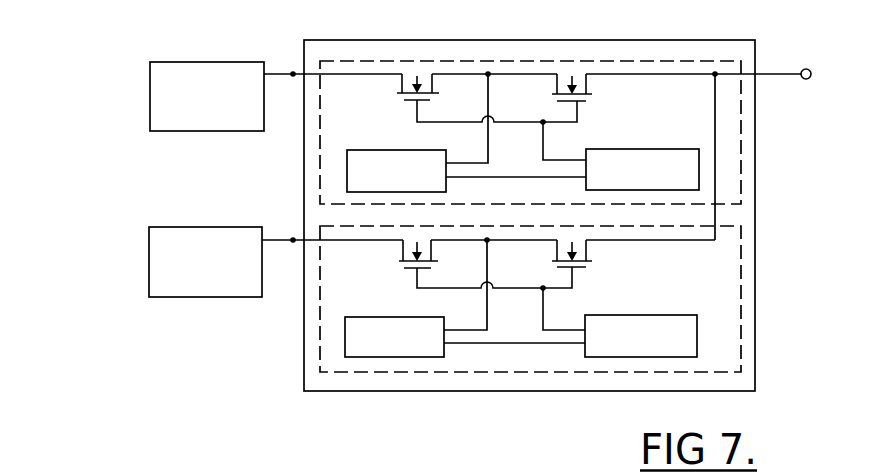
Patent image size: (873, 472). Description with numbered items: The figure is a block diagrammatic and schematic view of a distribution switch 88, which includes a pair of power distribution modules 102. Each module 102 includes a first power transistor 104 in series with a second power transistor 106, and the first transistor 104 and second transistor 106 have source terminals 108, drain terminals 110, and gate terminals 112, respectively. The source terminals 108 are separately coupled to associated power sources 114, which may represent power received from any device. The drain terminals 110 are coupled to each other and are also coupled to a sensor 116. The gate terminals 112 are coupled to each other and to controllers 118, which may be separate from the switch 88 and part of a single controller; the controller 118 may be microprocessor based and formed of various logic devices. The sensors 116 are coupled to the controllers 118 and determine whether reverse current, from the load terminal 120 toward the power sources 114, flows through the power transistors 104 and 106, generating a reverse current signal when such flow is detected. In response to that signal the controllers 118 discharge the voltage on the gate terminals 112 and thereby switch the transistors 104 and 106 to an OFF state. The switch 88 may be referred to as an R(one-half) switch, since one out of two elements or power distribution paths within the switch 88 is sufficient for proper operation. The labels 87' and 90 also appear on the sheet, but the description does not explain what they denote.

The distribution switch 88 is at (675, 40).
The power distribution module 102 is at (742, 204).
The first power transistor 104 is at (397, 94).
The second power transistor 106 is at (592, 94).
The source terminal 108 is at (402, 83).
The drain terminal 110 is at (444, 74).
The gate terminal 112 is at (419, 104).
The power source 114 is at (149, 93).
The sensor 116 is at (347, 170).
The controller 118 is at (699, 170).
The load terminal 120 is at (805, 80).
The wiring harness 87' is at (419, 457).
The connector 90 is at (207, 4).